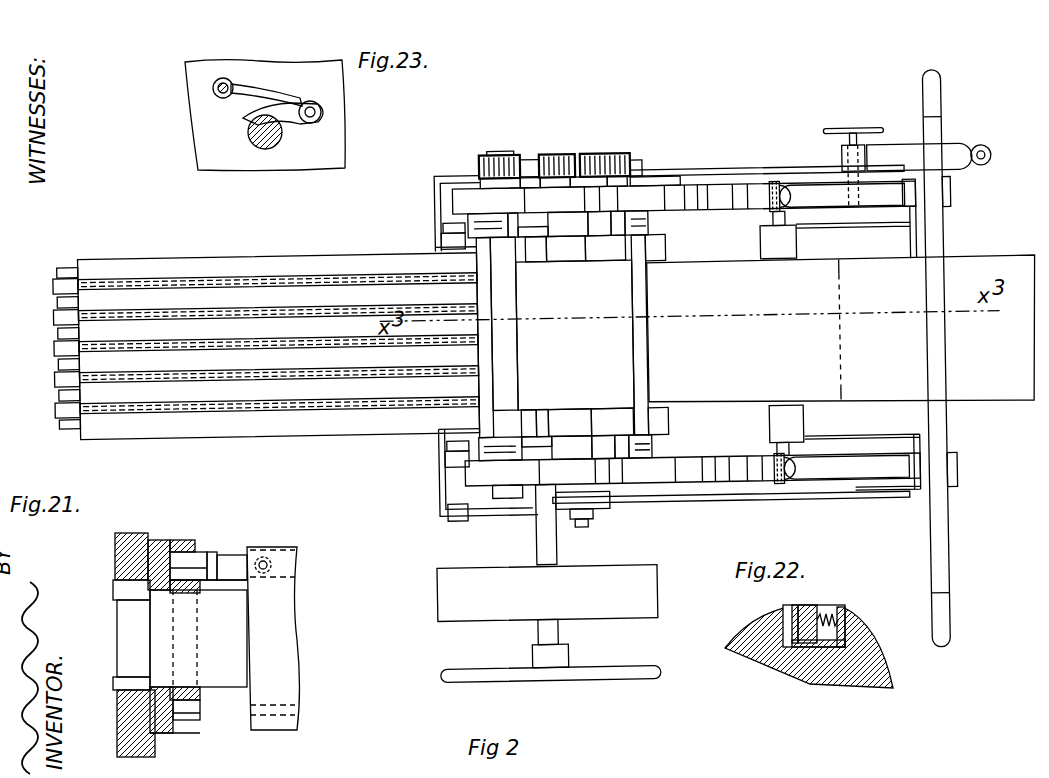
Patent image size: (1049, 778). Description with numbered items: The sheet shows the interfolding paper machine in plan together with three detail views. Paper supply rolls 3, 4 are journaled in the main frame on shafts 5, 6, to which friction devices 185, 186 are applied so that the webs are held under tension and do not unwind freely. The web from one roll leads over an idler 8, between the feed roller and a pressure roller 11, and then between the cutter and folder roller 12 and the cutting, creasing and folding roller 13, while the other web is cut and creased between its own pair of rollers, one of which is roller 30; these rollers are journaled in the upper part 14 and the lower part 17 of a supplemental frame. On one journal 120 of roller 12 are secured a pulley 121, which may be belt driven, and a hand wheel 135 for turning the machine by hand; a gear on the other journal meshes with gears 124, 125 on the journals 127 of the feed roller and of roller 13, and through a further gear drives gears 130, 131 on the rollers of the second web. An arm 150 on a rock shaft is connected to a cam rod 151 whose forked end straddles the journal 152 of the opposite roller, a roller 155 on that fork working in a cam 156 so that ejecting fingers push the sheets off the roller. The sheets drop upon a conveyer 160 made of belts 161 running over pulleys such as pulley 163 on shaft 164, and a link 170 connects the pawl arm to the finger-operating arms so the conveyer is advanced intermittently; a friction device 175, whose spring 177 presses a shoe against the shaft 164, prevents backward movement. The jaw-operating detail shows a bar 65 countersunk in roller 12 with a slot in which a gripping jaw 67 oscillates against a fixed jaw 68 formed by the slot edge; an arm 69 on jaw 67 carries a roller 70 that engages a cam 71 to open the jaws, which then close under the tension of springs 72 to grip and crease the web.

In FIG. 2, the conveyer 160 is at (302, 256).
In FIG. 2, the belts 161 is at (226, 279).
In FIG. 2, the pulley 163 is at (58, 375).
In FIG. 2, the upper part of supplemental frame 14 is at (464, 203).
In FIG. 21, the upper part of supplemental frame 14 is at (103, 557).
In FIG. 2, the gear 124 is at (484, 160).
In FIG. 2, the journal 127 is at (501, 152).
In FIG. 2, the gear 125 is at (559, 155).
In FIG. 2, the gear 131 is at (613, 155).
In FIG. 2, the gear 130 is at (641, 165).
In FIG. 2, the lower part of supplemental frame 17 is at (714, 186).
In FIG. 23, the lower part of supplemental frame 17 is at (334, 114).
In FIG. 2, the friction device 185 is at (970, 122).
In FIG. 2, the friction device 186 is at (946, 160).
In FIG. 2, the shaft 5 is at (942, 232).
In FIG. 2, the shaft 6 is at (960, 331).
In FIG. 2, the cutting, creasing and folding roller 13 is at (564, 250).
In FIG. 2, the cutting, creasing and folding roller 30 is at (605, 249).
In FIG. 2, the pressure roller 11 is at (510, 358).
In FIG. 2, the idler 8 is at (786, 424).
In FIG. 2, the paper supply roll 3 is at (975, 404).
In FIG. 2, the paper supply roll 4 is at (920, 358).
In FIG. 2, the arm 150 is at (455, 512).
In FIG. 2, the cam rod 151 is at (507, 505).
In FIG. 2, the journal 120 is at (548, 547).
In FIG. 2, the journal 152 is at (560, 508).
In FIG. 2, the roller 155 is at (625, 530).
In FIG. 2, the cam 156 is at (628, 543).
In FIG. 2, the pulley 121 is at (547, 593).
In FIG. 2, the hand wheel 135 is at (656, 683).
In FIG. 23, the friction device 175 is at (270, 87).
In FIG. 23, the spring 177 is at (225, 99).
In FIG. 23, the shaft 164 is at (285, 128).
In FIG. 23, the link 170 is at (300, 127).
In FIG. 21, the roller 70 is at (197, 553).
In FIG. 21, the arm 69 is at (212, 553).
In FIG. 21, the gripping jaw 67 is at (243, 552).
In FIG. 22, the gripping jaw 67 is at (813, 610).
In FIG. 21, the springs 72 is at (272, 562).
In FIG. 22, the springs 72 is at (843, 620).
In FIG. 21, the cam 71 is at (187, 590).
In FIG. 21, the cutter and folder roller 12 is at (273, 638).
In FIG. 22, the cutter and folder roller 12 is at (885, 661).
In FIG. 22, the gripping jaw 68 is at (793, 607).
In FIG. 22, the bar 65 is at (857, 633).